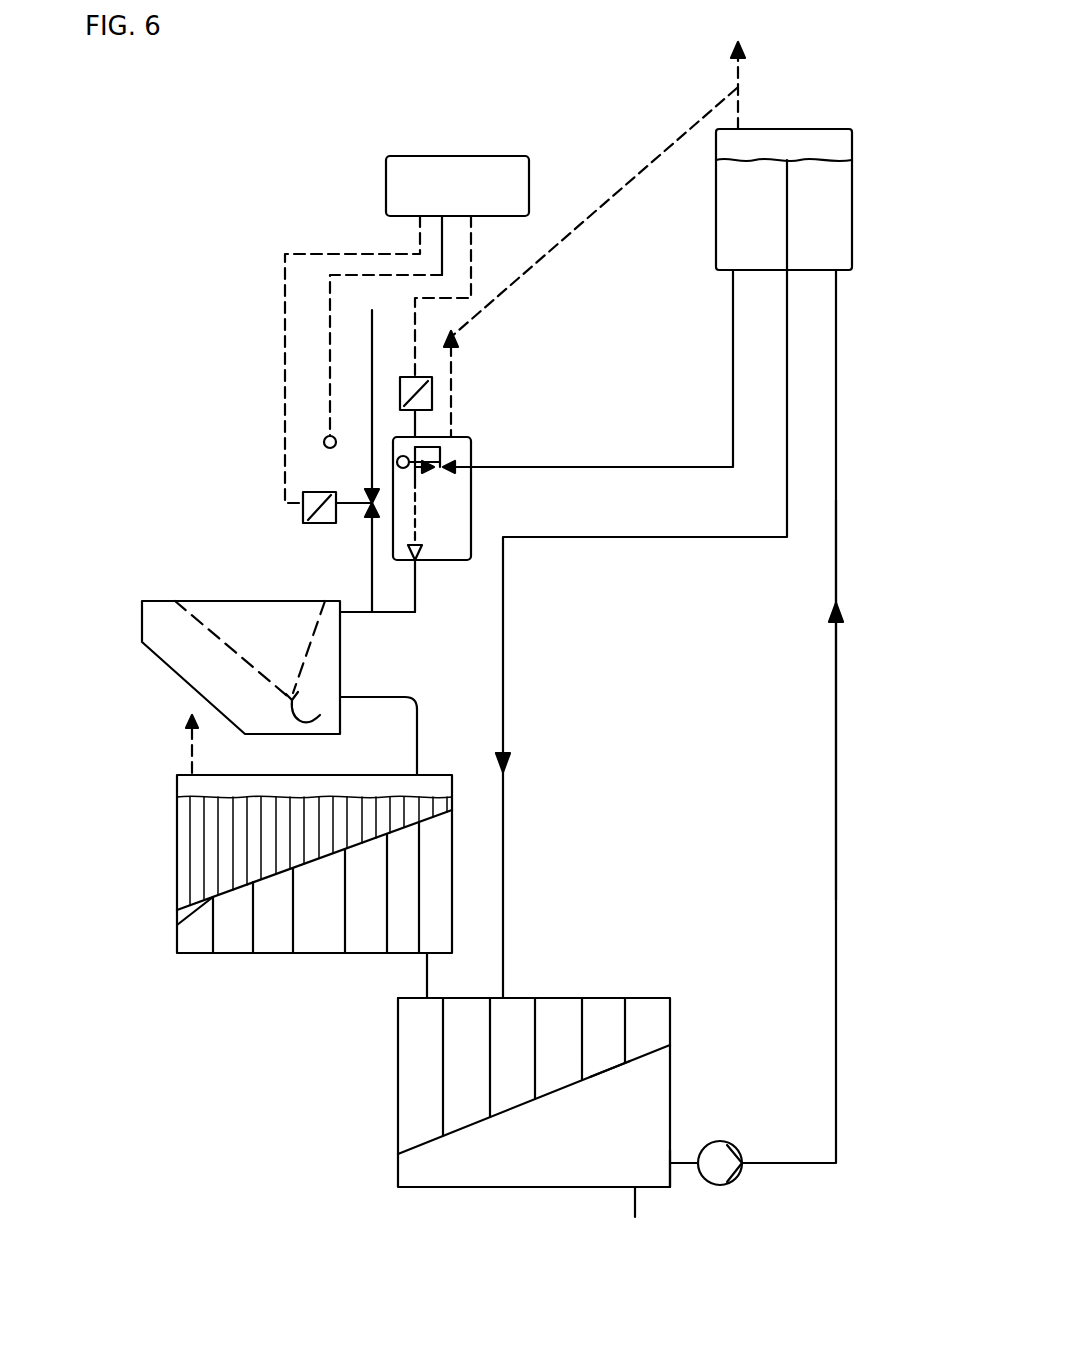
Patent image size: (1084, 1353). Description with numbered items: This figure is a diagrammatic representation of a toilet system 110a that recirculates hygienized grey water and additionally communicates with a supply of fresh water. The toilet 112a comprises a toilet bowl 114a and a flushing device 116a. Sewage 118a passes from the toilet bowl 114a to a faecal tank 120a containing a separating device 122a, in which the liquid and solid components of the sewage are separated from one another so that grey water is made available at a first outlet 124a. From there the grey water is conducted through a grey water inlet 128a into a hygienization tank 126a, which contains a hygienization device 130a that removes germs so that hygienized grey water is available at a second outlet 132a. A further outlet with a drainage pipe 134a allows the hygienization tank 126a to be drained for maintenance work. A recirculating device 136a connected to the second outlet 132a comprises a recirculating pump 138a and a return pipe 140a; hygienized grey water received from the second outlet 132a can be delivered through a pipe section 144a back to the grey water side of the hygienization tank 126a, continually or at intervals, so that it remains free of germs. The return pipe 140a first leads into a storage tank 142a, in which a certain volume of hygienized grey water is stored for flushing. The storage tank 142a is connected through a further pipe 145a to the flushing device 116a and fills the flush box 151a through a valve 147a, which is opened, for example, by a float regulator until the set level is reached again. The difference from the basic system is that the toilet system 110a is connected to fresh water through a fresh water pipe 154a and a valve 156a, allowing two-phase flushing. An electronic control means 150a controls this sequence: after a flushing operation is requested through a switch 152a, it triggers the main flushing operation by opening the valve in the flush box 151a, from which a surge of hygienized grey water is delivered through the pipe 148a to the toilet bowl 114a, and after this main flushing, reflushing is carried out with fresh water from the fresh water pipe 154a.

The toilet system 110a is at (210, 1152).
The toilet 112a is at (198, 560).
The toilet bowl 114a is at (150, 601).
The flushing device 116a is at (262, 462).
The sewage 118a is at (405, 692).
The faecal tank 120a is at (177, 848).
The separating device 122a is at (177, 925).
The first outlet 124a is at (427, 958).
The hygienization tank 126a is at (398, 1120).
The grey water inlet 128a is at (427, 990).
The hygienization device 130a is at (613, 1068).
The second outlet 132a is at (675, 1167).
The drainage pipe 134a is at (633, 1192).
The recirculating device 136a is at (855, 752).
The recirculating pump 138a is at (740, 1175).
The return pipe 140a is at (838, 920).
The storage tank 142a is at (852, 196).
The pipe section 144a is at (505, 780).
The pipe 145a is at (596, 466).
The valve 147a is at (446, 463).
The pipe 148a is at (400, 613).
The electronic control means 150a is at (457, 156).
The flush box 151a is at (455, 563).
The switch 152a is at (324, 438).
The fresh water pipe 154a is at (371, 320).
The valve 156a is at (360, 523).